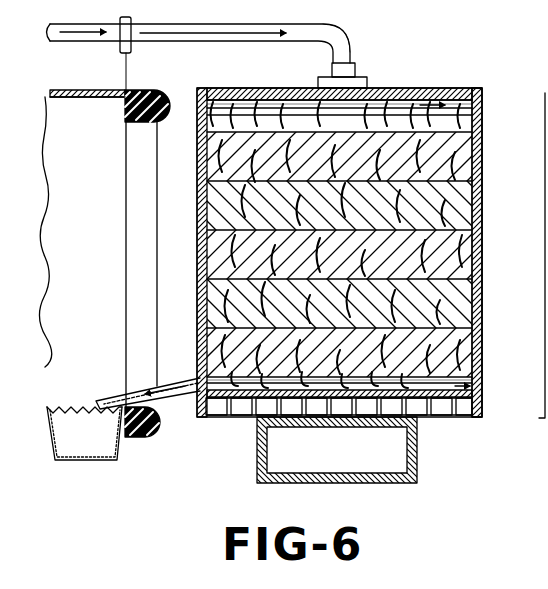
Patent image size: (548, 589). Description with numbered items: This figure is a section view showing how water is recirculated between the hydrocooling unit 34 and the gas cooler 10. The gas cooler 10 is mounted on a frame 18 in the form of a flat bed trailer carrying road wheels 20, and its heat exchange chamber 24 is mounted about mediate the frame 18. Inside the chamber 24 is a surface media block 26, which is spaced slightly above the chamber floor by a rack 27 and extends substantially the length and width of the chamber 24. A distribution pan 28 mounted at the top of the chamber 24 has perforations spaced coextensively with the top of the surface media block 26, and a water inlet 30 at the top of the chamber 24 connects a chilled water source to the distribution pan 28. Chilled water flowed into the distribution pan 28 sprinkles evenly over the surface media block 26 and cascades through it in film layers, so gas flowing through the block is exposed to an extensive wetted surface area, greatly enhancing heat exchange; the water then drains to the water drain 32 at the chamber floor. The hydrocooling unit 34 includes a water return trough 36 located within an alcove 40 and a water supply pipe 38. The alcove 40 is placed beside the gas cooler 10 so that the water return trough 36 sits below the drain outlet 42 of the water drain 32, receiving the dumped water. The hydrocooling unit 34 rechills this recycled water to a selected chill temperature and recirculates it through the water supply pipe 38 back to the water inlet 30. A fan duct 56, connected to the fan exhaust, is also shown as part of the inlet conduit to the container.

The gas cooler 10 is at (432, 430).
The frame 18 is at (236, 417).
The road wheels 20 is at (199, 45).
The heat exchange chamber 24 is at (453, 97).
The surface media block 26 is at (463, 198).
The rack 27 is at (513, 362).
The distribution pan 28 is at (468, 102).
The water inlet 30 is at (360, 82).
The water drain 32 is at (345, 384).
The hydrocooling unit 34 is at (97, 90).
The water return trough 36 is at (80, 412).
The water supply pipe 38 is at (341, 50).
The alcove 40 is at (88, 267).
The drain outlet 42 is at (178, 378).
The fan duct 56 is at (353, 483).